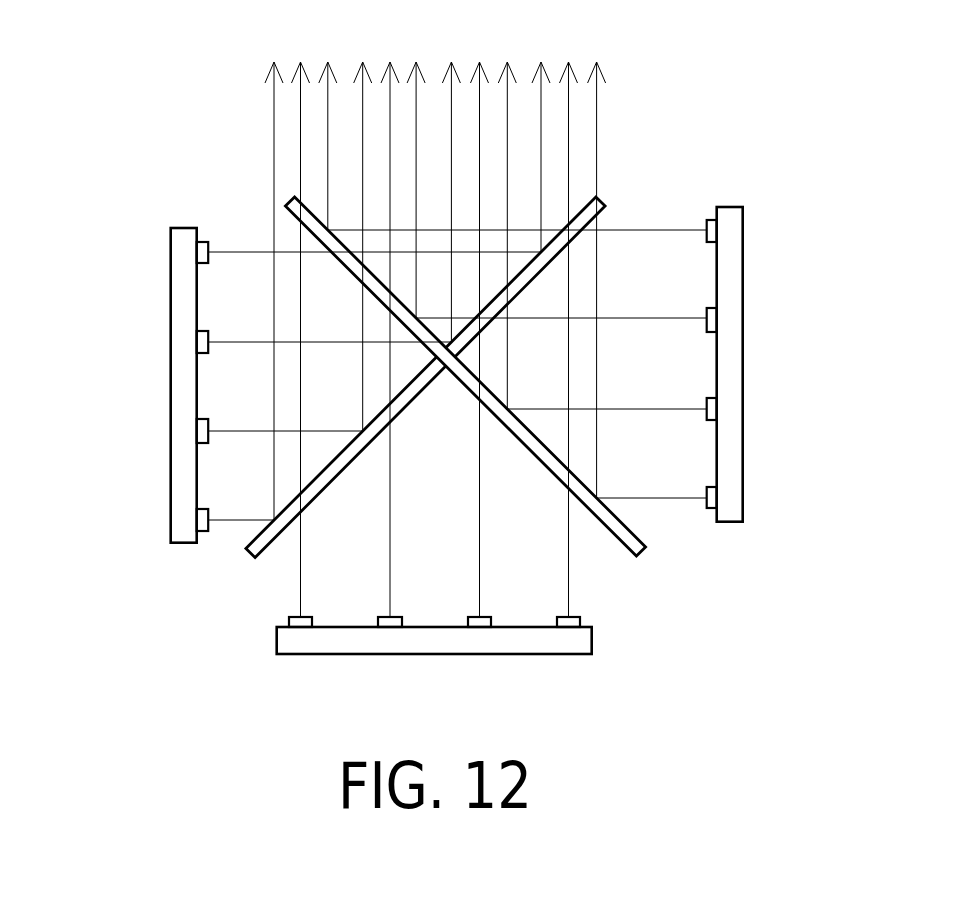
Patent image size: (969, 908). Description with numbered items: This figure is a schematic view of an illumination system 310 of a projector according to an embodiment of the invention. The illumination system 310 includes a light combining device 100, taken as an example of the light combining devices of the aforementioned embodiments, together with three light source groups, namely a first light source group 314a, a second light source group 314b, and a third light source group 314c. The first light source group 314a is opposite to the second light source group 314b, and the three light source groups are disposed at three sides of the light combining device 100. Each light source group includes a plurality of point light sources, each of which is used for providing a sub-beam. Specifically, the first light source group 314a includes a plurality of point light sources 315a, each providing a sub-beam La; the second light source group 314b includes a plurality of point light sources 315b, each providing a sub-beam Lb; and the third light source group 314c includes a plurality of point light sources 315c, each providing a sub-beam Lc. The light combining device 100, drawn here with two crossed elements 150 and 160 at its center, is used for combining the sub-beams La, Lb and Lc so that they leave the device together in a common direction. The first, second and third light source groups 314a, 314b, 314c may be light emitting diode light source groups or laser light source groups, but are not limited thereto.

The illumination system 310 is at (158, 72).
The first light source group 314a is at (182, 478).
The point light sources 315a is at (203, 521).
The second light source group 314b is at (735, 451).
The point light sources 315b is at (712, 495).
The third light source group 314c is at (422, 640).
The point light sources 315c is at (299, 620).
The first dichroic mirror 150 is at (256, 543).
The second dichroic mirror 160 is at (625, 538).
The light combining device 100 is at (655, 562).
The sub-beam La is at (242, 252).
The sub-beam Lb is at (653, 230).
The sub-beam Lc is at (300, 570).